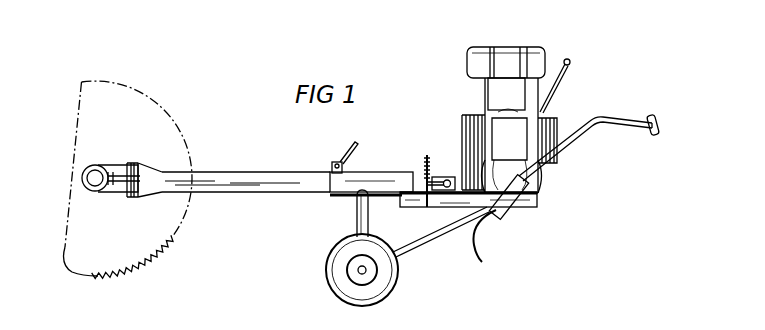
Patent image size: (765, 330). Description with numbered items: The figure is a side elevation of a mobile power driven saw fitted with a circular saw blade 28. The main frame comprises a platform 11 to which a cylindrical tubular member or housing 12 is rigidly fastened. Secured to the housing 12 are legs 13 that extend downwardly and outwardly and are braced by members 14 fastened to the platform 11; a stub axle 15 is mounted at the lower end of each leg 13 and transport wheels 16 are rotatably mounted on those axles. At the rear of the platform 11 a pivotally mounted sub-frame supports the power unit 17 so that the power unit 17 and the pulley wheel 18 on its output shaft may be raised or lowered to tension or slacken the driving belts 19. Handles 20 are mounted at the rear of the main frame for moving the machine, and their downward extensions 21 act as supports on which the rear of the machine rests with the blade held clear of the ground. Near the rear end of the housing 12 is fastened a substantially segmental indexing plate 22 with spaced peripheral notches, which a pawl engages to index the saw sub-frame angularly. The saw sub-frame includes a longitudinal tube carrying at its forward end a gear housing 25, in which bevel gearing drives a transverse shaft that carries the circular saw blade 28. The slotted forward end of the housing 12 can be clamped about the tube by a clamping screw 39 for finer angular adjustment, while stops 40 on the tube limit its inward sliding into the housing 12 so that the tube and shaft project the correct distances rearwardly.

The platform 11 is at (410, 200).
The cylindrical tubular member or housing 12 is at (345, 193).
The legs 13 is at (357, 228).
The members 14 is at (422, 247).
The stub axle 15 is at (366, 272).
The transport wheels 16 is at (327, 283).
The power unit 17 is at (506, 120).
The pulley wheel 18 is at (462, 117).
The driving belts 19 is at (471, 115).
The handles 20 is at (603, 117).
The downward extensions 21 is at (485, 254).
The indexing plate 22 is at (427, 155).
The gear housing 25 is at (97, 193).
The circular saw blade 28 is at (133, 255).
The clamping screw 39 is at (348, 157).
The stops 40 is at (332, 168).